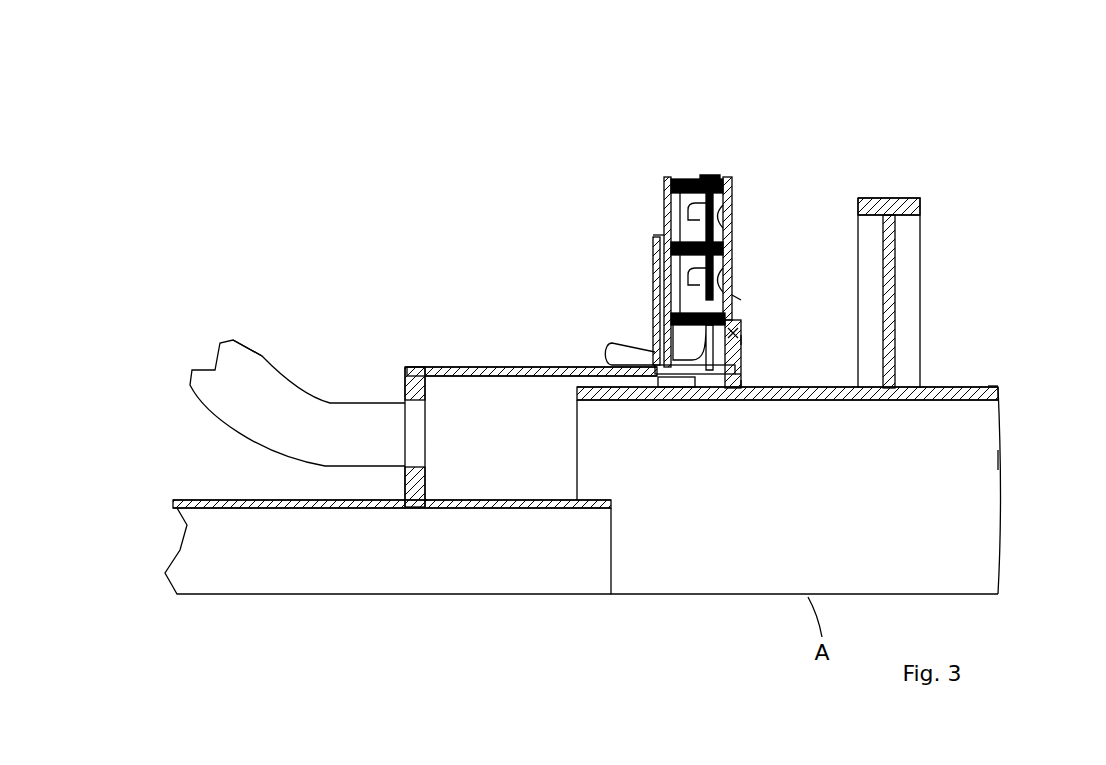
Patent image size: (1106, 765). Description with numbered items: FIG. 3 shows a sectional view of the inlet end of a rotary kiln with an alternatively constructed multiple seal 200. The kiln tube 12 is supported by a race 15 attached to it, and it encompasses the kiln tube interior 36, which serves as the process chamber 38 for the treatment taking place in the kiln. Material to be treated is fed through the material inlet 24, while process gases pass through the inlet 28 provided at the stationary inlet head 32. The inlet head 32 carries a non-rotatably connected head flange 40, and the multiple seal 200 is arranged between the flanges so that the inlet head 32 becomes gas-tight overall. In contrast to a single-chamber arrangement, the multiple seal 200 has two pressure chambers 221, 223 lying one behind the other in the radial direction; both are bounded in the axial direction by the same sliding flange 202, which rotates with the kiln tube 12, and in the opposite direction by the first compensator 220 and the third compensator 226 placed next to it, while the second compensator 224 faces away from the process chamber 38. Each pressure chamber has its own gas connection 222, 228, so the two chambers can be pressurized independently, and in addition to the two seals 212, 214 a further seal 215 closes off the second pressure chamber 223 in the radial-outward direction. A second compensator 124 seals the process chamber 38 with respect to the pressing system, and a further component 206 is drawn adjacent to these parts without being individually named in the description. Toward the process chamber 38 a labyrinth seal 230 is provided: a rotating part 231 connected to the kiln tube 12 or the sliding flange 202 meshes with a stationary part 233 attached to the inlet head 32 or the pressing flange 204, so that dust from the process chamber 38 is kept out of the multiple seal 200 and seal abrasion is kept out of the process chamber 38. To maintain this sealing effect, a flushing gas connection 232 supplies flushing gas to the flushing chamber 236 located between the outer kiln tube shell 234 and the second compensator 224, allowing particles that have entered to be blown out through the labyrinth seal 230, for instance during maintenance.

The kiln tube 12 is at (988, 386).
The race 15 is at (887, 197).
The material inlet 24 is at (198, 500).
The inlet 28 is at (262, 356).
The inlet head 32 is at (428, 220).
The kiln tube interior 36 is at (965, 468).
The process chamber 38 is at (850, 499).
The head flange 40 is at (652, 318).
The second compensator 124 is at (605, 349).
The multiple seal 200 is at (753, 102).
The sliding flange 202 is at (728, 193).
The pressing flange 204 is at (664, 195).
The side plate 206 is at (660, 326).
The seal 212 is at (740, 302).
The seal 214 is at (714, 231).
The further seal 215 is at (738, 185).
The first compensator 220 is at (722, 290).
The pressure chamber 221 is at (735, 263).
The gas connection 222 is at (690, 268).
The pressure chamber 223 is at (732, 202).
The second compensator 224 is at (742, 342).
The third compensator 226 is at (722, 222).
The gas connection 228 is at (690, 212).
The labyrinth seal 230 is at (742, 386).
The part 231 is at (740, 350).
The flushing gas connection 232 is at (605, 376).
The part 233 is at (678, 378).
The outer kiln tube shell 234 is at (740, 376).
The flushing chamber 236 is at (733, 333).